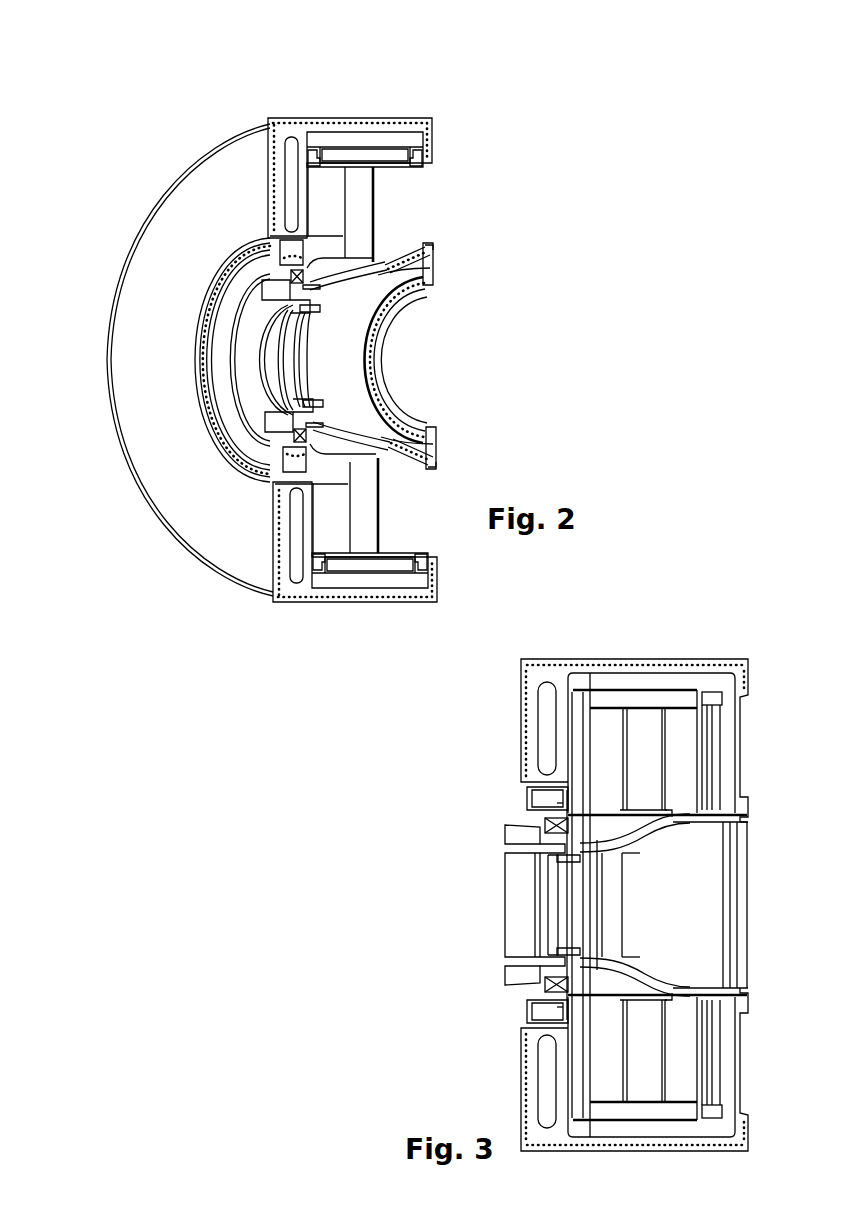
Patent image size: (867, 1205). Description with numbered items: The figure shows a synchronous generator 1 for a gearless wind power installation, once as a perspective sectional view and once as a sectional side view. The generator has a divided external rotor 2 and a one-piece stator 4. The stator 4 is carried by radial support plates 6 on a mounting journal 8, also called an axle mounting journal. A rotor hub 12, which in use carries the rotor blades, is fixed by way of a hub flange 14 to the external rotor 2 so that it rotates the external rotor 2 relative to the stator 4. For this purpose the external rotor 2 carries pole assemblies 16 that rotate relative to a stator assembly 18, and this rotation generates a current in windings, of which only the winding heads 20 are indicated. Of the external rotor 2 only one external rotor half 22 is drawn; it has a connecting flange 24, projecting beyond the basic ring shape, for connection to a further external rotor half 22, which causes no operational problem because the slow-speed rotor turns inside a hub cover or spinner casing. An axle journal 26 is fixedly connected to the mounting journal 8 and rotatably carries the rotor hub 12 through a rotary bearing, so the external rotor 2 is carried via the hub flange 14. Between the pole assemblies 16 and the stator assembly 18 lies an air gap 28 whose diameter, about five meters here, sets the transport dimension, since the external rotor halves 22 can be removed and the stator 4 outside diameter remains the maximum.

In FIG. 2, the synchronous generator 1 is at (335, 75).
In FIG. 3, the synchronous generator 1 is at (688, 597).
In FIG. 2, the external rotor 2 is at (200, 193).
In FIG. 3, the external rotor 2 is at (557, 706).
In FIG. 2, the stator 4 is at (360, 227).
In FIG. 3, the stator 4 is at (673, 768).
In FIG. 2, the radial support plates 6 is at (377, 197).
In FIG. 3, the radial support plates 6 is at (647, 797).
In FIG. 2, the mounting journal 8 is at (343, 333).
In FIG. 3, the mounting journal 8 is at (700, 912).
In FIG. 2, the rotor hub 12 is at (267, 273).
In FIG. 3, the rotor hub 12 is at (513, 826).
In FIG. 2, the hub flange 14 is at (200, 307).
In FIG. 3, the hub flange 14 is at (528, 800).
In FIG. 2, the pole assemblies 16 is at (380, 138).
In FIG. 3, the pole assemblies 16 is at (683, 682).
In FIG. 2, the stator assembly 18 is at (370, 153).
In FIG. 3, the stator assembly 18 is at (680, 700).
In FIG. 2, the winding heads 20 is at (320, 147).
In FIG. 3, the winding heads 20 is at (712, 699).
In FIG. 2, the external rotor half 22 is at (130, 397).
In FIG. 3, the external rotor half 22 is at (478, 1067).
In FIG. 2, the connecting flange 24 is at (384, 118).
In FIG. 3, the connecting flange 24 is at (537, 672).
In FIG. 2, the axle journal 26 is at (237, 370).
In FIG. 3, the axle journal 26 is at (515, 958).
In FIG. 3, the air gap 28 is at (615, 686).